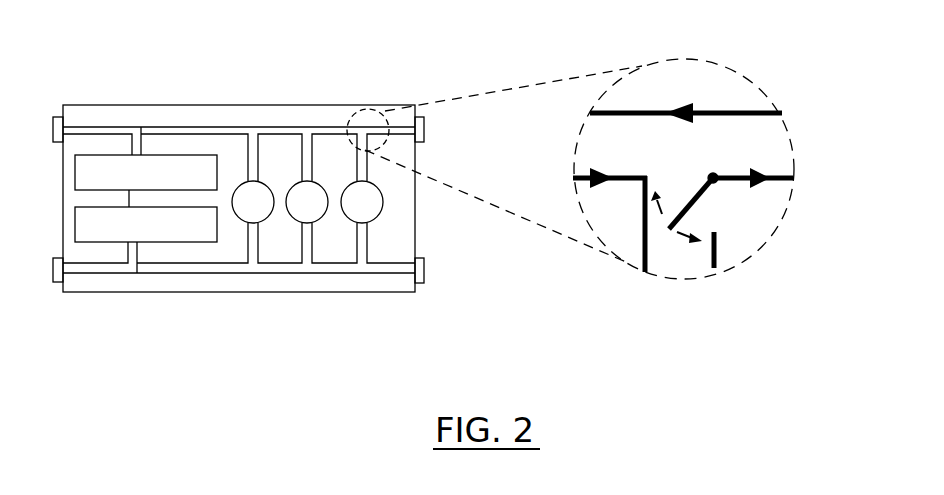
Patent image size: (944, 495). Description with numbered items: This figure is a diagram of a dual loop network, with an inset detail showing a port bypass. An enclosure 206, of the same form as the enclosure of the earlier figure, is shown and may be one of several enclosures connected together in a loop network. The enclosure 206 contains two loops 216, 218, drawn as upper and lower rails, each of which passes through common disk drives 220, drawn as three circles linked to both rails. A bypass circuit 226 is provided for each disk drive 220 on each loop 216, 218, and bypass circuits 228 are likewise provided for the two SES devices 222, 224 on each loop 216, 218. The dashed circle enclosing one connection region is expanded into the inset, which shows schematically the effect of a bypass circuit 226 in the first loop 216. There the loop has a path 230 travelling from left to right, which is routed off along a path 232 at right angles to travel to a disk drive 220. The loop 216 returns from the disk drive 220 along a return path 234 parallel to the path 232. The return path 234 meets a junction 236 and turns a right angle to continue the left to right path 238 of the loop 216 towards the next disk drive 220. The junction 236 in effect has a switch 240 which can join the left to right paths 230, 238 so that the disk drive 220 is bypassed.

The enclosure 206 is at (103, 105).
The first loop 216 is at (240, 127).
The second loop 218 is at (147, 276).
The disk drives 220 is at (260, 225).
The SES device 222 is at (75, 175).
The SES device 224 is at (75, 224).
The bypass circuit 226 is at (318, 118).
The bypass circuits 228 is at (141, 127).
The path 230 is at (575, 178).
The path 232 is at (643, 238).
The return path 234 is at (716, 250).
The junction 236 is at (713, 175).
The left to right path 238 is at (791, 183).
The switch 240 is at (695, 200).